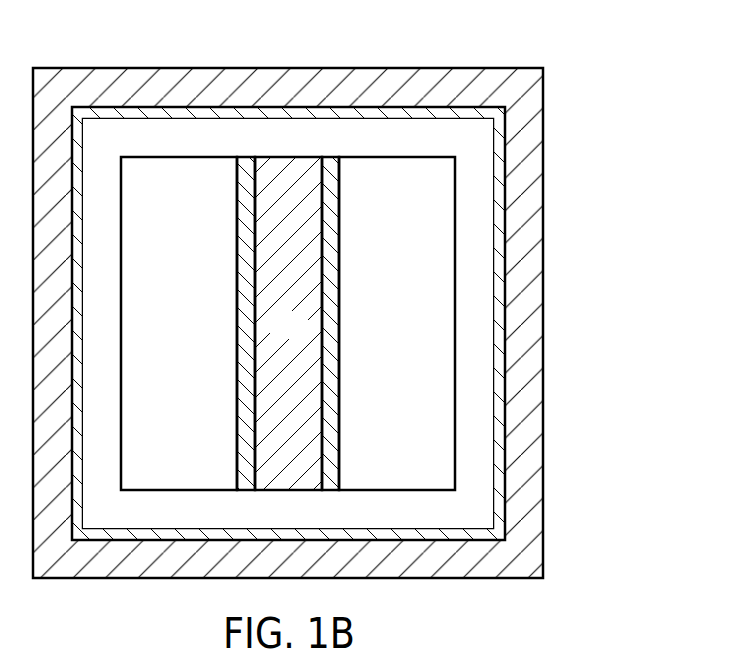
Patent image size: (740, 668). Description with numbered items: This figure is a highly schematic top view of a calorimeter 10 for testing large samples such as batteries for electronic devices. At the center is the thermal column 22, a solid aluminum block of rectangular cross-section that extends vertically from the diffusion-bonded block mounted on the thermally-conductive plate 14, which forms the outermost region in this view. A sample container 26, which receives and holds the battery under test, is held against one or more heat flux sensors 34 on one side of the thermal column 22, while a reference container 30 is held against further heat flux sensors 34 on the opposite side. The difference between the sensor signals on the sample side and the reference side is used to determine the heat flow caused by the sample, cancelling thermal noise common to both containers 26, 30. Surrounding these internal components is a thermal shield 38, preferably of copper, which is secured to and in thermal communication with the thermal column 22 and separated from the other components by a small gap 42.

The calorimeter 10 is at (363, 300).
The thermally-conductive plate 14 is at (525, 176).
The thermal column 22 is at (271, 337).
The sample container 26 is at (162, 337).
The reference container 30 is at (377, 337).
The heat flux sensors 34 is at (249, 157).
The thermal shield 38 is at (498, 210).
The gap 42 is at (141, 124).